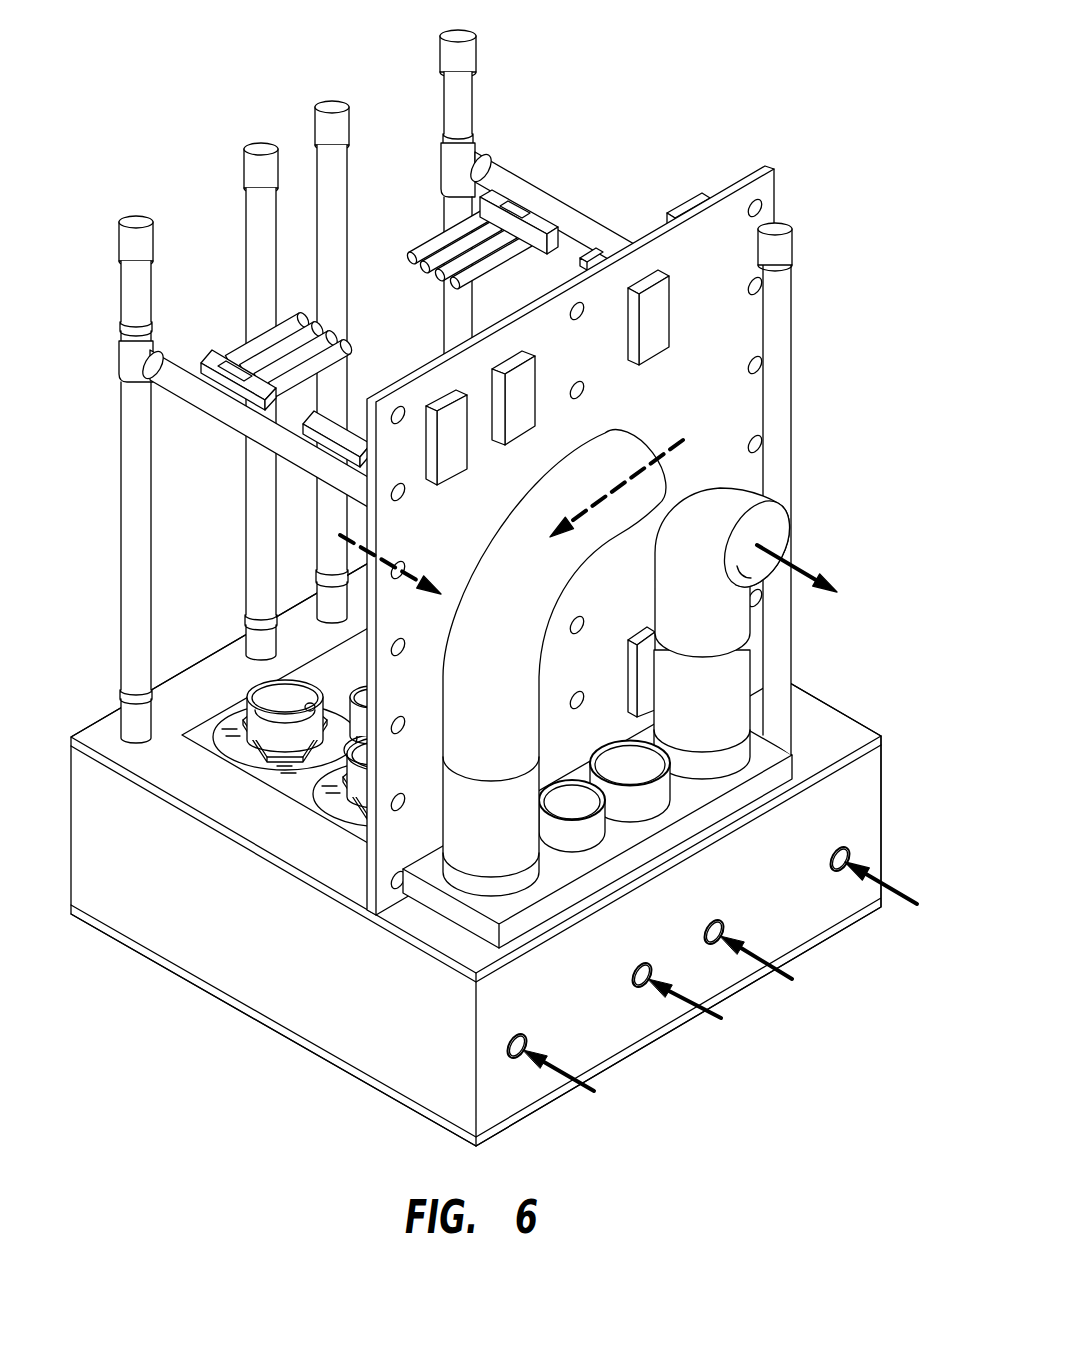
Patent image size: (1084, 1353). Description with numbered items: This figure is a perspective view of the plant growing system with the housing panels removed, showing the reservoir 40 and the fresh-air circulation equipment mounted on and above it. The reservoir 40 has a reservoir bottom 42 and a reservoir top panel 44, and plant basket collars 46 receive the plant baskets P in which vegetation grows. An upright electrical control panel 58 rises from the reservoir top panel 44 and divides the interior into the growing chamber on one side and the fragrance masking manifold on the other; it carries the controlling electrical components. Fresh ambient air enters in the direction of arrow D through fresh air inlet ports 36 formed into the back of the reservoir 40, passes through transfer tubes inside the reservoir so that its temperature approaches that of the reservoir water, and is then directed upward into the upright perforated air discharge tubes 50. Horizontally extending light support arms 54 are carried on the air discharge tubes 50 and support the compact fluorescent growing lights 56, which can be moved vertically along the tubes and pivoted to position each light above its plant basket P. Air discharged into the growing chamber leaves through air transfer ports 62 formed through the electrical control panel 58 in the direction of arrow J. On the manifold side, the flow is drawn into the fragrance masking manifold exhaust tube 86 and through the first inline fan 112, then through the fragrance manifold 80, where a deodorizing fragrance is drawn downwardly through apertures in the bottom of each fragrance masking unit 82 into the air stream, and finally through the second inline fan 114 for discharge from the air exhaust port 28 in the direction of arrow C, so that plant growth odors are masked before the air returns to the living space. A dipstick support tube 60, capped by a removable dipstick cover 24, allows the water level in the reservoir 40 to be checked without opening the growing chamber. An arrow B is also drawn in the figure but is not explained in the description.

The dipstick cover 24 is at (794, 242).
The air exhaust port 28 is at (754, 616).
The fresh air inlet port 36 is at (715, 943).
The reservoir 40 is at (476, 823).
The reservoir bottom 42 is at (656, 1043).
The reservoir top panel 44 is at (289, 836).
The plant basket collar 46 is at (267, 733).
The perforated air discharge tube 50 is at (474, 104).
The light support arm 54 is at (222, 420).
The fluorescent growing light 56 is at (508, 247).
The electrical control panel 58 is at (728, 192).
The dipstick support tube 60 is at (612, 540).
The air transfer port 62 is at (581, 317).
The fragrance manifold 80 is at (778, 755).
The fragrance masking unit 82 is at (657, 792).
The fragrance masking manifold exhaust tube 86 is at (552, 713).
The inline fan 112 is at (503, 830).
The inline fan 114 is at (737, 685).
The flow direction B is at (616, 478).
The arrow C is at (797, 566).
The arrow D is at (881, 880).
The arrow J is at (390, 564).
The plant basket P is at (355, 697).